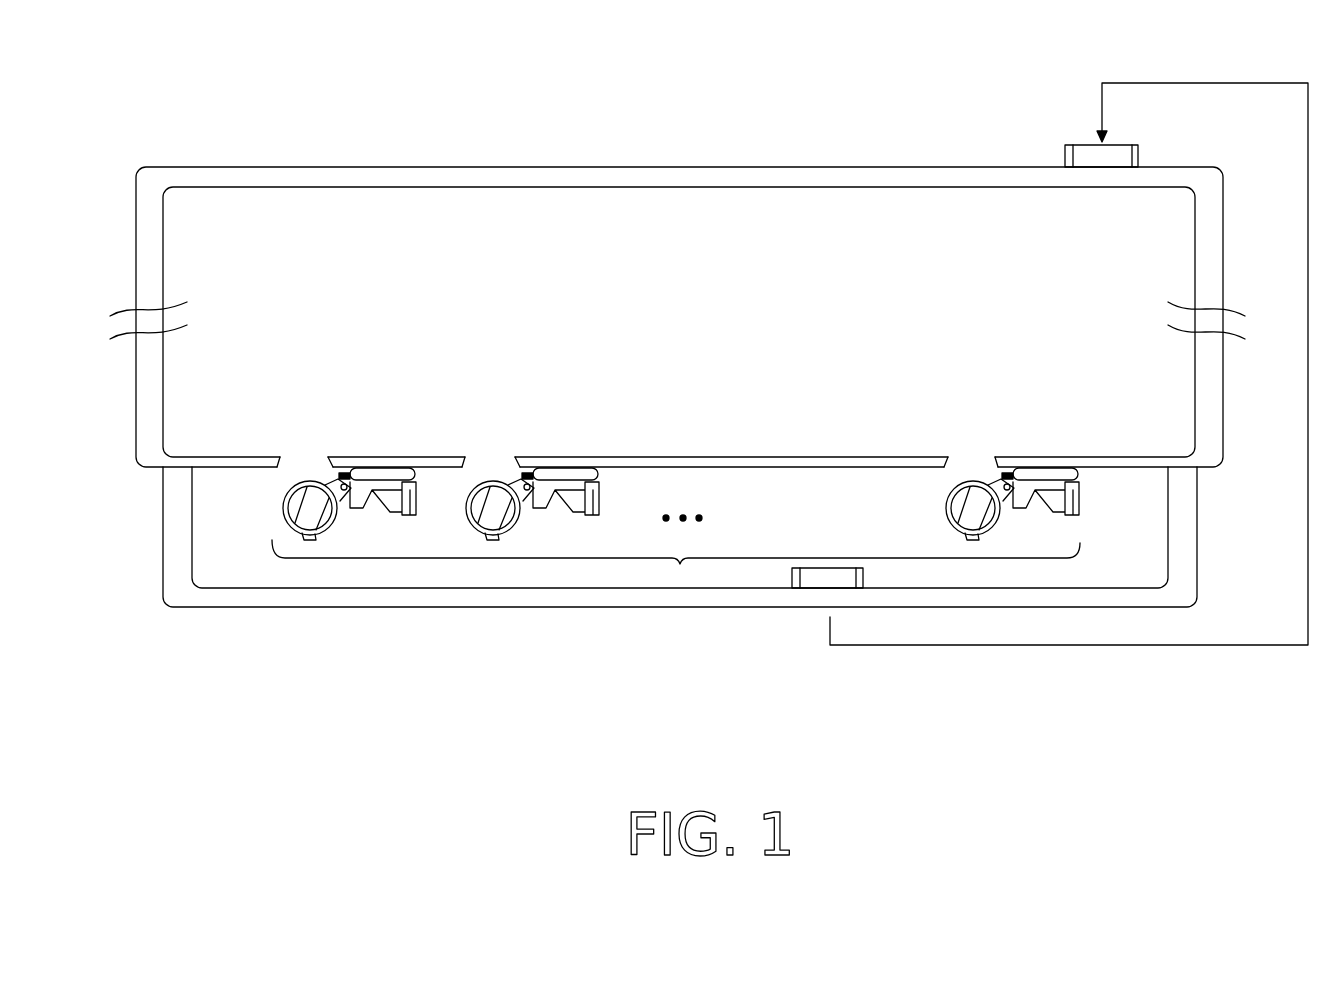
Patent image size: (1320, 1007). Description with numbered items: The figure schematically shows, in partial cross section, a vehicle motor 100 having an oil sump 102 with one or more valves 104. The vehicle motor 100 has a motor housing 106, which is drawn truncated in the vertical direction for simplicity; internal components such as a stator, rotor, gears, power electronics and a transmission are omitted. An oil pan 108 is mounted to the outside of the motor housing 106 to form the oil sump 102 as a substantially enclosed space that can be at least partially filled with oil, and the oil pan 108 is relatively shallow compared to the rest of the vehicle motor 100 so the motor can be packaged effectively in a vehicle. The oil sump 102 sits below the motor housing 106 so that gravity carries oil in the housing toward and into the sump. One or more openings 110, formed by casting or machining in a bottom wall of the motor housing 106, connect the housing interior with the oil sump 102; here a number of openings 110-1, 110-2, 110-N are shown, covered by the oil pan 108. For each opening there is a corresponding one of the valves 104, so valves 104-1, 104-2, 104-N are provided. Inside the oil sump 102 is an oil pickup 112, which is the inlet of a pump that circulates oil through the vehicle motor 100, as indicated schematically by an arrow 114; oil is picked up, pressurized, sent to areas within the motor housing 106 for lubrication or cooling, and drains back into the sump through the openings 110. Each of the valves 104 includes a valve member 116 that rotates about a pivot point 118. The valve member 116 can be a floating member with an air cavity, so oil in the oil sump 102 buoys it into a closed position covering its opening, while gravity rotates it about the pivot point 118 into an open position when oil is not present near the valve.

The vehicle motor 100 is at (174, 84).
The oil sump 102 is at (1105, 503).
The valves 104 is at (678, 562).
The first valve 104-1 is at (323, 555).
The second valve 104-2 is at (520, 553).
The Nth valve 104-N is at (998, 553).
The motor housing 106 is at (163, 226).
The oil pan 108 is at (1197, 547).
The openings 110 is at (247, 412).
The first opening 110-1 is at (278, 458).
The second opening 110-2 is at (463, 462).
The Nth opening 110-N is at (945, 460).
The oil pickup 112 is at (803, 582).
The arrow 114 is at (1308, 488).
The valve member 116 is at (283, 500).
The pivot point 118 is at (347, 487).